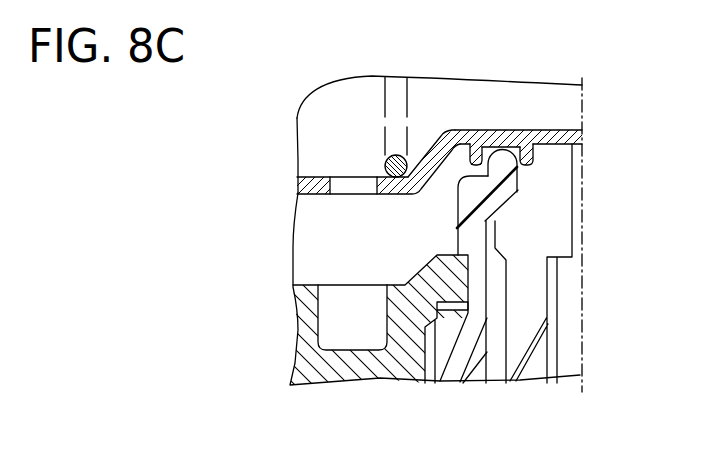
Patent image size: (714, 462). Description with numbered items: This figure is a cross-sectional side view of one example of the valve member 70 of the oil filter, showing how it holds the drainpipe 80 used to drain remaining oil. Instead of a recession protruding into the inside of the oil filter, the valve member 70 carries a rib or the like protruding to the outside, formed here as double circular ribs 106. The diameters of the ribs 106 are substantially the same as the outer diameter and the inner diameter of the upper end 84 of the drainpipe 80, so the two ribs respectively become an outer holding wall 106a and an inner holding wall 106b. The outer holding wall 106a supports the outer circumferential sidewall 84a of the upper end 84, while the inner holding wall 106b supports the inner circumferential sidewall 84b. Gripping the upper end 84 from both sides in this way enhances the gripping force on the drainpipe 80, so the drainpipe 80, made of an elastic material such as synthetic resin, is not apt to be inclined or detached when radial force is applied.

The valve member 70 is at (363, 158).
The drainpipe 80 is at (463, 355).
The upper end 84 is at (527, 179).
The outer circumferential sidewall 84a is at (490, 170).
The inner circumferential sidewall 84b is at (518, 190).
The double circular ribs 106 is at (495, 116).
The outer holding wall 106a is at (478, 158).
The inner holding wall 106b is at (527, 158).